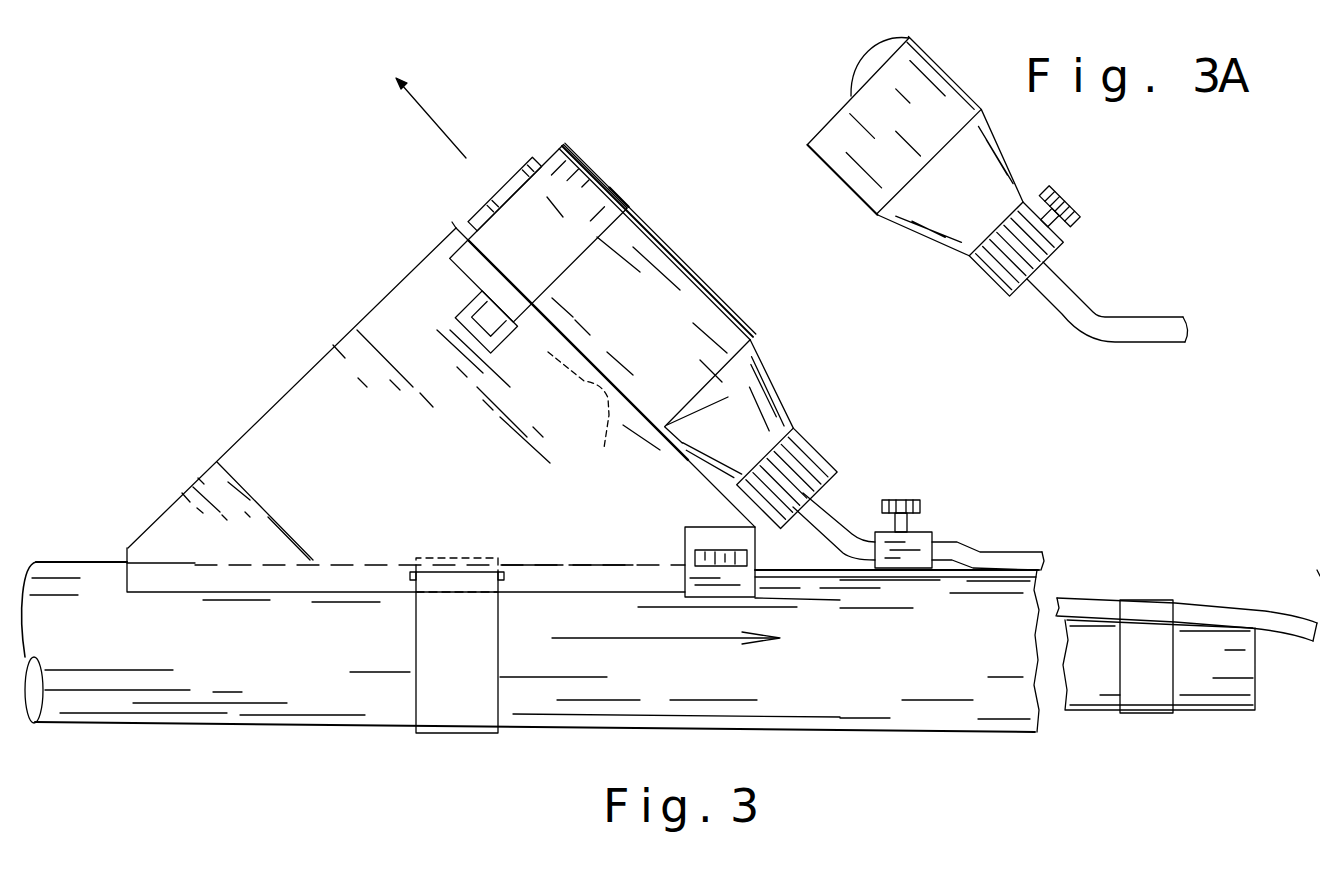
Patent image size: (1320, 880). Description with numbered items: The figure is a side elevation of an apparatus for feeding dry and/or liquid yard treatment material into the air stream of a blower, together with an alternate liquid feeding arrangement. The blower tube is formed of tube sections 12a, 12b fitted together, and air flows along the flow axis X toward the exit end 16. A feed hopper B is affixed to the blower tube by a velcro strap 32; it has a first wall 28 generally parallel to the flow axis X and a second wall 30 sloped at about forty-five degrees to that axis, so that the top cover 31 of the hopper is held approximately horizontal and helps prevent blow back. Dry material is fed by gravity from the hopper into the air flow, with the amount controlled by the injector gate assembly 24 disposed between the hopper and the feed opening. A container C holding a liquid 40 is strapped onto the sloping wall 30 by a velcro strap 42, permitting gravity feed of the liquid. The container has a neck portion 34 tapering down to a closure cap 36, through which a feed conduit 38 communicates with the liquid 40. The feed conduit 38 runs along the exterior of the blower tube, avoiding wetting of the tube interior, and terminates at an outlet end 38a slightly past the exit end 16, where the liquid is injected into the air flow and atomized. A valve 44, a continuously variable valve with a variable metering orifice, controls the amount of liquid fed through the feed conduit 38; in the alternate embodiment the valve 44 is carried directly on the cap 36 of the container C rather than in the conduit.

In FIG. 3, the tube section 12a is at (68, 556).
In FIG. 3, the tube section 12b is at (1103, 710).
In FIG. 3, the exit end 16 is at (1258, 672).
In FIG. 3, the injector gate assembly 24 is at (757, 550).
In FIG. 3, the first wall 28 is at (283, 593).
In FIG. 3, the second wall 30 is at (452, 224).
In FIG. 3, the top cover 31 is at (198, 478).
In FIG. 3, the velcro strap 32 is at (448, 735).
In FIG. 3, the neck portion 34 is at (770, 380).
In FIG. 3A, the neck portion 34 is at (963, 195).
In FIG. 3, the closure cap 36 is at (803, 447).
In FIG. 3A, the closure cap 36 is at (1063, 253).
In FIG. 3, the feed conduit 38 is at (843, 520).
In FIG. 3A, the feed conduit 38 is at (1123, 315).
In FIG. 3, the outlet end 38a is at (1319, 572).
In FIG. 3, the liquid 40 is at (660, 326).
In FIG. 3, the velcro strap 42 is at (553, 232).
In FIG. 3, the valve 44 is at (905, 500).
In FIG. 3A, the valve 44 is at (1073, 203).
In FIG. 3, the feed hopper B is at (279, 380).
In FIG. 3, the container C is at (659, 250).
In FIG. 3A, the container C is at (940, 60).
In FIG. 3, the flow axis X is at (675, 655).